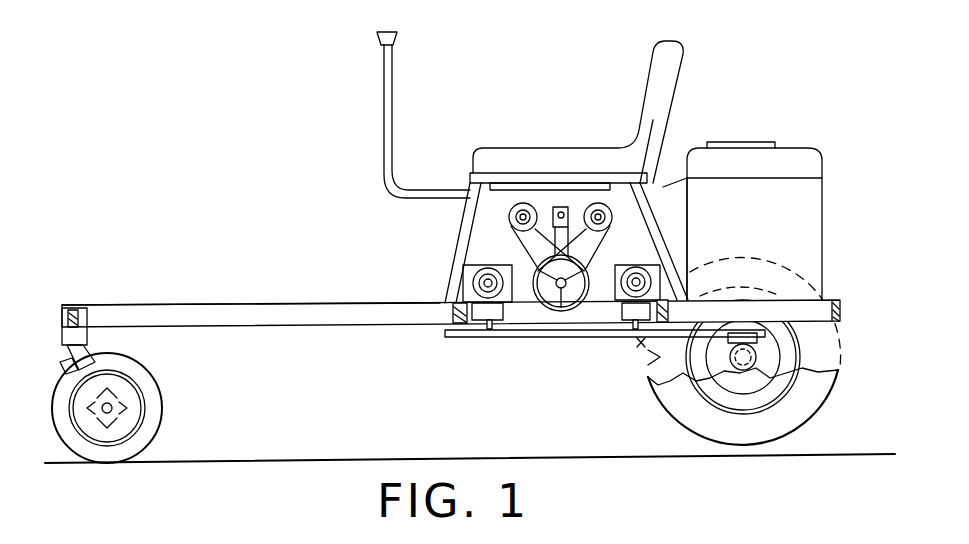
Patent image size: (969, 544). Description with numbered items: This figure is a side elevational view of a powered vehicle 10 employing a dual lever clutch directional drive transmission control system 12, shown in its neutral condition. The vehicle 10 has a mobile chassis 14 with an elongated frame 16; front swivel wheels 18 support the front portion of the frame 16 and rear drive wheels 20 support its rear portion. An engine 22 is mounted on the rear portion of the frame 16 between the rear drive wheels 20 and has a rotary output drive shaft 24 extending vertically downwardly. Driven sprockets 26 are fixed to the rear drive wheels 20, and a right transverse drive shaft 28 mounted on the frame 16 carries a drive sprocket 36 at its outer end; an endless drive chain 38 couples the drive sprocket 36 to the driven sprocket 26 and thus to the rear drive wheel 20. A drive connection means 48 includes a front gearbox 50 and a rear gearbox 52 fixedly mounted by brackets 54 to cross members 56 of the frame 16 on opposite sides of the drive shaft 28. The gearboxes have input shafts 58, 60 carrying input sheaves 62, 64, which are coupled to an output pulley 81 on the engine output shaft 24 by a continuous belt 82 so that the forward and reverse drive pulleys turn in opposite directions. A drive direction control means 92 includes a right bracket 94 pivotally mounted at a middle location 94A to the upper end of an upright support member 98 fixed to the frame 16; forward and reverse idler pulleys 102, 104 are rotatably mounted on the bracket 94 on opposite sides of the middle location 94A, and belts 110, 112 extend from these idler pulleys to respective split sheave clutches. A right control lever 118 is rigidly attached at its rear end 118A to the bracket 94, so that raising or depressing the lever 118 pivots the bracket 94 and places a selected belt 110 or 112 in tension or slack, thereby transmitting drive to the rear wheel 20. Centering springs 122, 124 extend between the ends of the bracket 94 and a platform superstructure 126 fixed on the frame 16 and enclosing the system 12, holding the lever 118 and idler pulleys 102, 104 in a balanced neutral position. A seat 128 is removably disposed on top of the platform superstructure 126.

The powered vehicle 10 is at (240, 125).
The drive transmission control system 12 is at (657, 222).
The mobile chassis 14 is at (242, 304).
The elongated frame 16 is at (267, 323).
The front swivel wheels 18 is at (140, 373).
The rear drive wheels 20 is at (833, 400).
The engine 22 is at (823, 198).
The rotary output drive shaft 24 is at (752, 298).
The driven sprockets 26 is at (775, 328).
The right transverse drive shaft 28 is at (518, 331).
The drive sprockets 36 is at (571, 318).
The endless drive chains 38 is at (658, 358).
The drive connection means 48 is at (460, 345).
The front gearbox 50 is at (663, 280).
The rear gearbox 52 is at (463, 270).
The brackets 54 is at (457, 304).
The cross members 56 is at (450, 315).
The input shaft 58 is at (470, 340).
The input shaft 60 is at (605, 320).
The input sheave 62 is at (448, 337).
The input sheave 64 is at (640, 341).
The output pulley 81 is at (760, 354).
The continuous belt 82 is at (532, 338).
The drive direction control means 92 is at (554, 182).
The right bracket 94 is at (566, 206).
The middle location 94A is at (569, 206).
The upright support members 98 is at (598, 250).
The forward idler pulley 102 is at (647, 187).
The reverse idler pulley 104 is at (509, 222).
The belt 110 is at (686, 176).
The belt 112 is at (496, 250).
The right control lever 118 is at (393, 92).
The rear end 118A is at (535, 204).
The centering spring 122 is at (462, 192).
The centering spring 124 is at (663, 187).
The platform superstructure 126 is at (460, 231).
The seat 128 is at (505, 148).